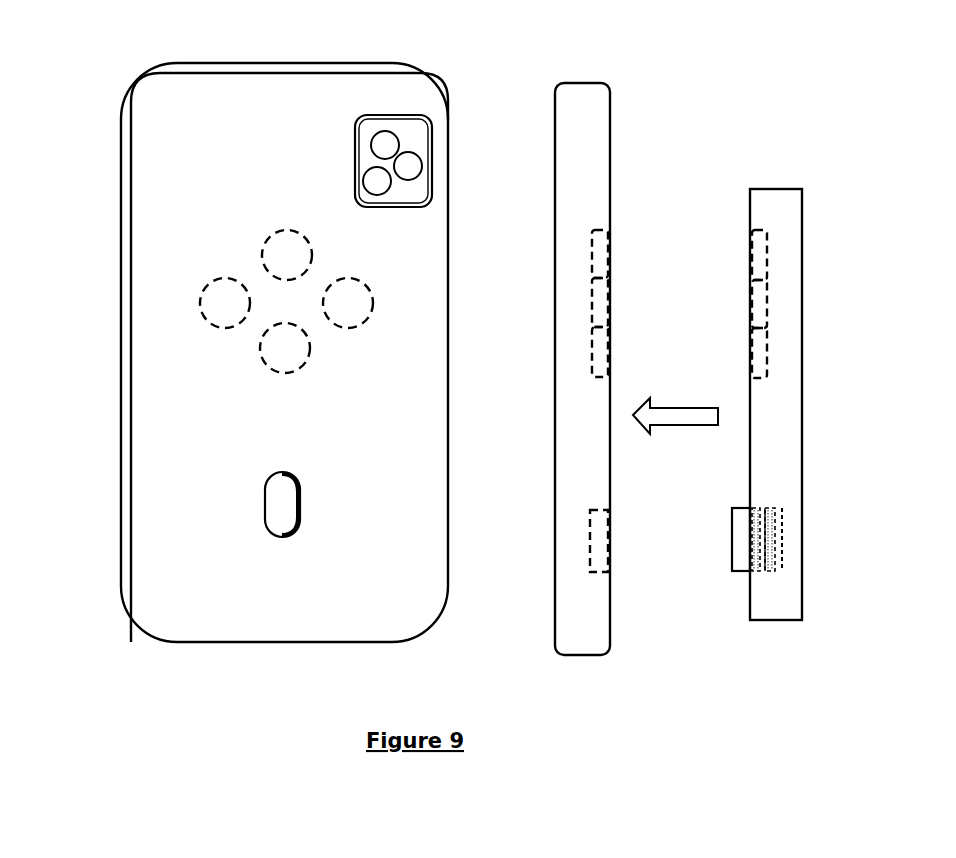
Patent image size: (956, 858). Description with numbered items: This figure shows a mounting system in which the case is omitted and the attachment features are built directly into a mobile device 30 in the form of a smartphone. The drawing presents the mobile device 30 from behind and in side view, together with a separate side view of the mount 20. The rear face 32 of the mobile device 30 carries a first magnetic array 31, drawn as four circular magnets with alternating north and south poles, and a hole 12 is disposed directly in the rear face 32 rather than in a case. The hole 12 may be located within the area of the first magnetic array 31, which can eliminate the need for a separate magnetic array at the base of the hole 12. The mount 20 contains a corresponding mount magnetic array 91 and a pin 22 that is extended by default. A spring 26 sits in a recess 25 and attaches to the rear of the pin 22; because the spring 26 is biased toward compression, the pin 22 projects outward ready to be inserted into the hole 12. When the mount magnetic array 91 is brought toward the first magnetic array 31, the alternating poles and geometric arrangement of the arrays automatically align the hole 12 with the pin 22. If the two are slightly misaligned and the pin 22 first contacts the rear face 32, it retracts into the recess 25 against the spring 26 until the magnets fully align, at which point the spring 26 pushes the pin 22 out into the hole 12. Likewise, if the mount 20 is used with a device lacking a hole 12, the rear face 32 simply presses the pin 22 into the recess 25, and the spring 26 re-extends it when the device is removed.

The mobile device 30 is at (150, 79).
The first magnetic array 31 is at (203, 284).
The rear face 32 is at (289, 357).
The hole 12 is at (265, 502).
The mount 20 is at (776, 404).
The mount magnetic array 91 is at (748, 347).
The pin 22 is at (732, 520).
The recess 25 is at (783, 540).
The spring 26 is at (765, 542).